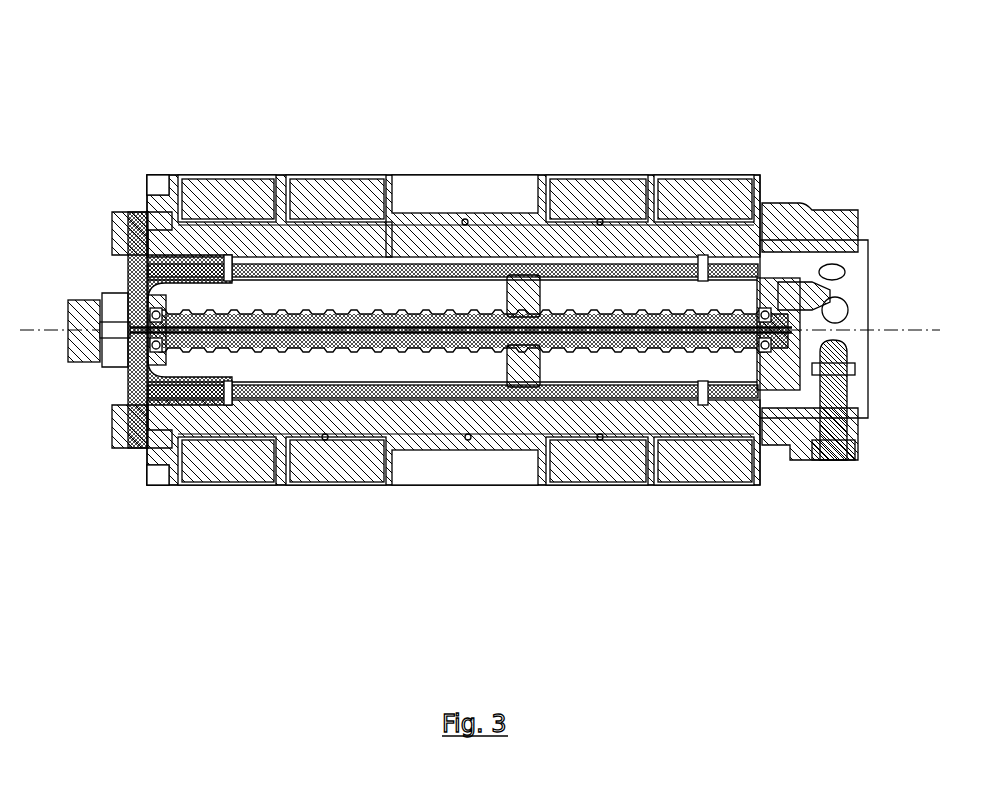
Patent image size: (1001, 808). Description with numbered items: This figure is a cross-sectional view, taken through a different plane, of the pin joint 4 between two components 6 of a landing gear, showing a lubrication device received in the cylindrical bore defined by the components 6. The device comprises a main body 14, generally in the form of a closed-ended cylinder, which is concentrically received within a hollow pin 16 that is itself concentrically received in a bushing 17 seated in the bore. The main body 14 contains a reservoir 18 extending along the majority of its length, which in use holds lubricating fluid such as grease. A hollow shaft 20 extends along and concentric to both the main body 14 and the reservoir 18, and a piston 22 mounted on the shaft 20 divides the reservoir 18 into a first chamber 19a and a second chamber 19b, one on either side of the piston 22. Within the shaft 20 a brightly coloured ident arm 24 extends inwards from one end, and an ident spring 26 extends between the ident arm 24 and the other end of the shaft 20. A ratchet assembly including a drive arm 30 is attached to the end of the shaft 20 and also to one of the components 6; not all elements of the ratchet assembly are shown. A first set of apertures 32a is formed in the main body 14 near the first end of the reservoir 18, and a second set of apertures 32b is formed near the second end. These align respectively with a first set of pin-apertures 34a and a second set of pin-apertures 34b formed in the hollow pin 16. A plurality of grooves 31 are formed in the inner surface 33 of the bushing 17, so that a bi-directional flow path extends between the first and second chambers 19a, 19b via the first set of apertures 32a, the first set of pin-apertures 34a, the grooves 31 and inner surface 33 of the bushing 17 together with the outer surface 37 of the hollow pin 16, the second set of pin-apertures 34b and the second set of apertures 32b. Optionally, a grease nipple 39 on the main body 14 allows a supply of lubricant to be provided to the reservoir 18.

The pin joint 4 is at (175, 568).
The components 6 is at (330, 196).
The main body 14 is at (467, 425).
The hollow pin 16 is at (390, 232).
The bushing 17 is at (440, 215).
The reservoir 18 is at (571, 380).
The first chamber 19a is at (223, 373).
The second chamber 19b is at (600, 290).
The shaft 20 is at (470, 312).
The piston 22 is at (523, 290).
The ident arm 24 is at (233, 328).
The ident spring 26 is at (672, 328).
The drive arm 30 is at (73, 317).
The grooves 31 is at (600, 222).
The first set of apertures 32a is at (200, 385).
The second set of apertures 32b is at (735, 430).
The inner surface 33 is at (264, 224).
The first set of pin-apertures 34a is at (226, 395).
The second set of pin-apertures 34b is at (703, 410).
The outer surface 37 is at (372, 436).
The grease nipple 39 is at (800, 295).